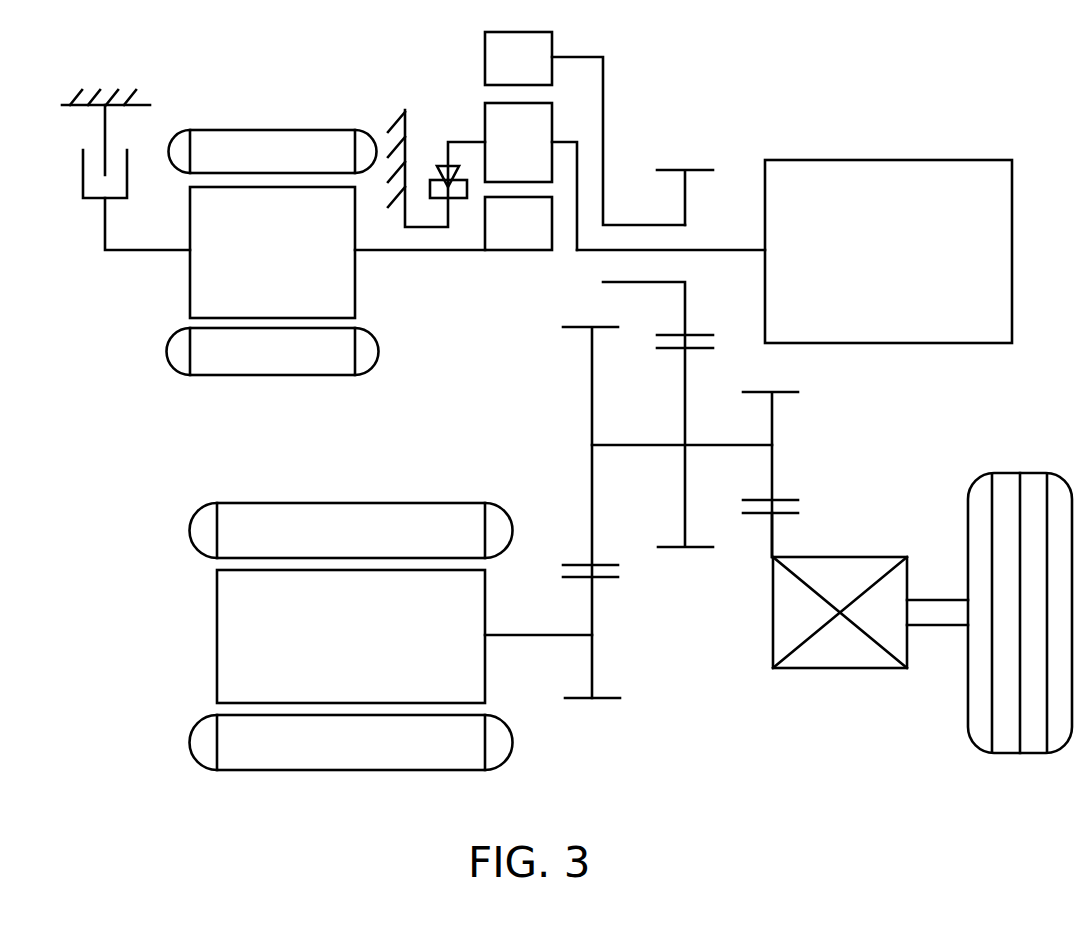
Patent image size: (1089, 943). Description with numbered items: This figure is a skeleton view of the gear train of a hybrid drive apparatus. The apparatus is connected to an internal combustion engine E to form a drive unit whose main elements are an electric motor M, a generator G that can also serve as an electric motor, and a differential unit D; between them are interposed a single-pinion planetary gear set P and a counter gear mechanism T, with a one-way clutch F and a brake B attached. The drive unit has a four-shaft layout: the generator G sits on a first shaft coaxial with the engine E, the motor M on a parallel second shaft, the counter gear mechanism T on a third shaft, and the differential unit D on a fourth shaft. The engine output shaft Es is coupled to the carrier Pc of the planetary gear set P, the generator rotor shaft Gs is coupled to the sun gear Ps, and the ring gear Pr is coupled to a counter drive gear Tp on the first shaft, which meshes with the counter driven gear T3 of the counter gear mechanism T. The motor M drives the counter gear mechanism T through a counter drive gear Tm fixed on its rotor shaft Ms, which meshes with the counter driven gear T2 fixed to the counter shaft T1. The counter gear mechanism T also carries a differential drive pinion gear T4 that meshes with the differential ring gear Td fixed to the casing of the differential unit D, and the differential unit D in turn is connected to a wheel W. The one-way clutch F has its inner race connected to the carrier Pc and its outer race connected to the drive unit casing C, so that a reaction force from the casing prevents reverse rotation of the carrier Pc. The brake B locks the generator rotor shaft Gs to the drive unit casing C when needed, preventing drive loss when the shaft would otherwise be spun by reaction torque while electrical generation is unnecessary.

The brake B is at (92, 206).
The drive unit casing C is at (134, 112).
The generator G is at (170, 272).
The rotor shaft of the generator Gs is at (428, 252).
The one-way clutch F is at (440, 152).
The planetary gear set P is at (560, 183).
The ring gear Pr is at (485, 50).
The carrier Pc is at (570, 140).
The sun gear Ps is at (532, 240).
The counter drive gear Tp is at (675, 170).
The output shaft of the engine Es is at (732, 250).
The engine E is at (936, 162).
The counter gear mechanism T is at (691, 523).
The counter shaft T1 is at (637, 445).
The counter driven gear T2 is at (592, 396).
The counter driven gear T3 is at (673, 550).
The differential drive pinion gear T4 is at (772, 410).
The differential ring gear Td is at (772, 538).
The counter drive gear Tm is at (582, 700).
The electric motor M is at (200, 636).
The rotor shaft of the motor Ms is at (528, 634).
The differential unit D is at (850, 554).
The wheel W is at (1005, 484).